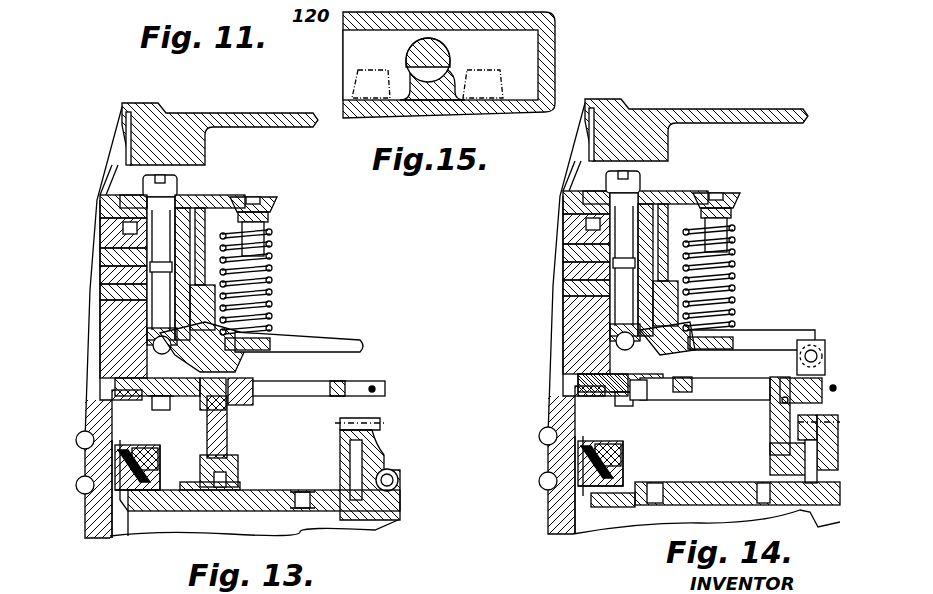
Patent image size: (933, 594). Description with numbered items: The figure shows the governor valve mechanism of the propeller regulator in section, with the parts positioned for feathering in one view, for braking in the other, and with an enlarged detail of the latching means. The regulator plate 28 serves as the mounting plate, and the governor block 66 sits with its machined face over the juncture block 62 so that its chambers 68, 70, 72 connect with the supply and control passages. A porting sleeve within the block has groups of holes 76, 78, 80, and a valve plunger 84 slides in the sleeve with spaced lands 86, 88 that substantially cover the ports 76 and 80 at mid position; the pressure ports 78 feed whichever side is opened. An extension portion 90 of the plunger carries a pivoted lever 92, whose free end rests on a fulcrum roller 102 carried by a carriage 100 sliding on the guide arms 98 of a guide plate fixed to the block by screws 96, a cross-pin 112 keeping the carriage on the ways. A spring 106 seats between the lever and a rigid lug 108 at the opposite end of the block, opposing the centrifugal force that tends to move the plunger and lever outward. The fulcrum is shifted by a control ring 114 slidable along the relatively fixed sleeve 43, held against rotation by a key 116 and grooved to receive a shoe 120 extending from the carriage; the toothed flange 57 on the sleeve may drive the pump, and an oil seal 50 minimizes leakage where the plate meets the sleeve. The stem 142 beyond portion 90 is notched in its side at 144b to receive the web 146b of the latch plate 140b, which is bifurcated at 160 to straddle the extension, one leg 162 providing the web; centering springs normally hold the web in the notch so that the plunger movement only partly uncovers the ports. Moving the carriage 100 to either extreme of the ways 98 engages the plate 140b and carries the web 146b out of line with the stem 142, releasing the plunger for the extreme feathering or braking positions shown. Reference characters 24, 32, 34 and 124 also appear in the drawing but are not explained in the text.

In FIG. 13, the cover plate 24 is at (240, 122).
In FIG. 14, the cover plate 24 is at (696, 122).
In FIG. 13, the regulator plate 28 is at (125, 165).
In FIG. 14, the regulator plate 28 is at (597, 130).
In FIG. 13, the juncture block 62 is at (112, 200).
In FIG. 14, the juncture block 62 is at (554, 318).
In FIG. 13, the chamber 72 is at (120, 218).
In FIG. 14, the chamber 72 is at (558, 205).
In FIG. 13, the chamber 70 is at (125, 245).
In FIG. 14, the chamber 70 is at (556, 245).
In FIG. 13, the pressure ports 78 is at (125, 260).
In FIG. 14, the pressure ports 78 is at (558, 249).
In FIG. 13, the chamber 68 is at (128, 276).
In FIG. 14, the chamber 68 is at (556, 277).
In FIG. 13, the decrease pitch port 76 is at (122, 292).
In FIG. 14, the decrease pitch port 76 is at (551, 299).
In FIG. 13, the land 86 is at (160, 307).
In FIG. 14, the land 86 is at (568, 335).
In FIG. 13, the land 88 is at (172, 192).
In FIG. 14, the land 88 is at (654, 239).
In FIG. 13, the block 66 is at (192, 208).
In FIG. 14, the block 66 is at (658, 270).
In FIG. 13, the increase pitch port 80 is at (218, 206).
In FIG. 14, the increase pitch port 80 is at (607, 215).
In FIG. 13, the lug 108 is at (275, 205).
In FIG. 14, the lug 108 is at (742, 217).
In FIG. 13, the spring 106 is at (268, 242).
In FIG. 14, the spring 106 is at (737, 277).
In FIG. 13, the valve plunger 84 is at (150, 333).
In FIG. 14, the valve plunger 84 is at (574, 339).
In FIG. 13, the portion 90 is at (152, 349).
In FIG. 13, the stem 142 is at (160, 380).
In FIG. 14, the stem 142 is at (584, 362).
In FIG. 15, the stem 142 is at (406, 50).
In FIG. 13, the web 146b is at (160, 404).
In FIG. 14, the web 146b is at (643, 403).
In FIG. 15, the web 146b is at (410, 78).
In FIG. 13, the notch 144b is at (115, 398).
In FIG. 14, the notch 144b is at (550, 393).
In FIG. 15, the notch 144b is at (449, 74).
In FIG. 13, the upper bore 34 is at (84, 446).
In FIG. 14, the upper bore 34 is at (534, 436).
In FIG. 13, the oil seal 50 is at (130, 470).
In FIG. 14, the oil seal 50 is at (565, 485).
In FIG. 13, the lower bore 32 is at (84, 494).
In FIG. 14, the lower bore 32 is at (532, 485).
In FIG. 13, the lever 92 is at (292, 345).
In FIG. 14, the lever 92 is at (756, 338).
In FIG. 13, the carriage 100 is at (250, 390).
In FIG. 14, the carriage 100 is at (777, 410).
In FIG. 13, the plate 140b is at (298, 396).
In FIG. 14, the plate 140b is at (680, 408).
In FIG. 15, the plate 140b is at (553, 68).
In FIG. 13, the guide arms 98 is at (368, 383).
In FIG. 14, the guide arms 98 is at (717, 393).
In FIG. 13, the cross-pin 112 is at (378, 389).
In FIG. 13, the shoe 120 is at (228, 433).
In FIG. 14, the shoe 120 is at (780, 432).
In FIG. 13, the control ring 114 is at (238, 470).
In FIG. 14, the control ring 114 is at (770, 463).
In FIG. 13, the toothed flange 57 is at (378, 456).
In FIG. 13, the sleeve 43 is at (208, 502).
In FIG. 14, the sleeve 43 is at (805, 506).
In FIG. 13, the key 116 is at (288, 502).
In FIG. 14, the key 116 is at (683, 460).
In FIG. 13, the base 124 is at (385, 527).
In FIG. 14, the fulcrum roller 102 is at (810, 338).
In FIG. 14, the screws 96 is at (575, 409).
In FIG. 15, the bifurcation 160 is at (376, 38).
In FIG. 15, the leg 162 is at (362, 112).